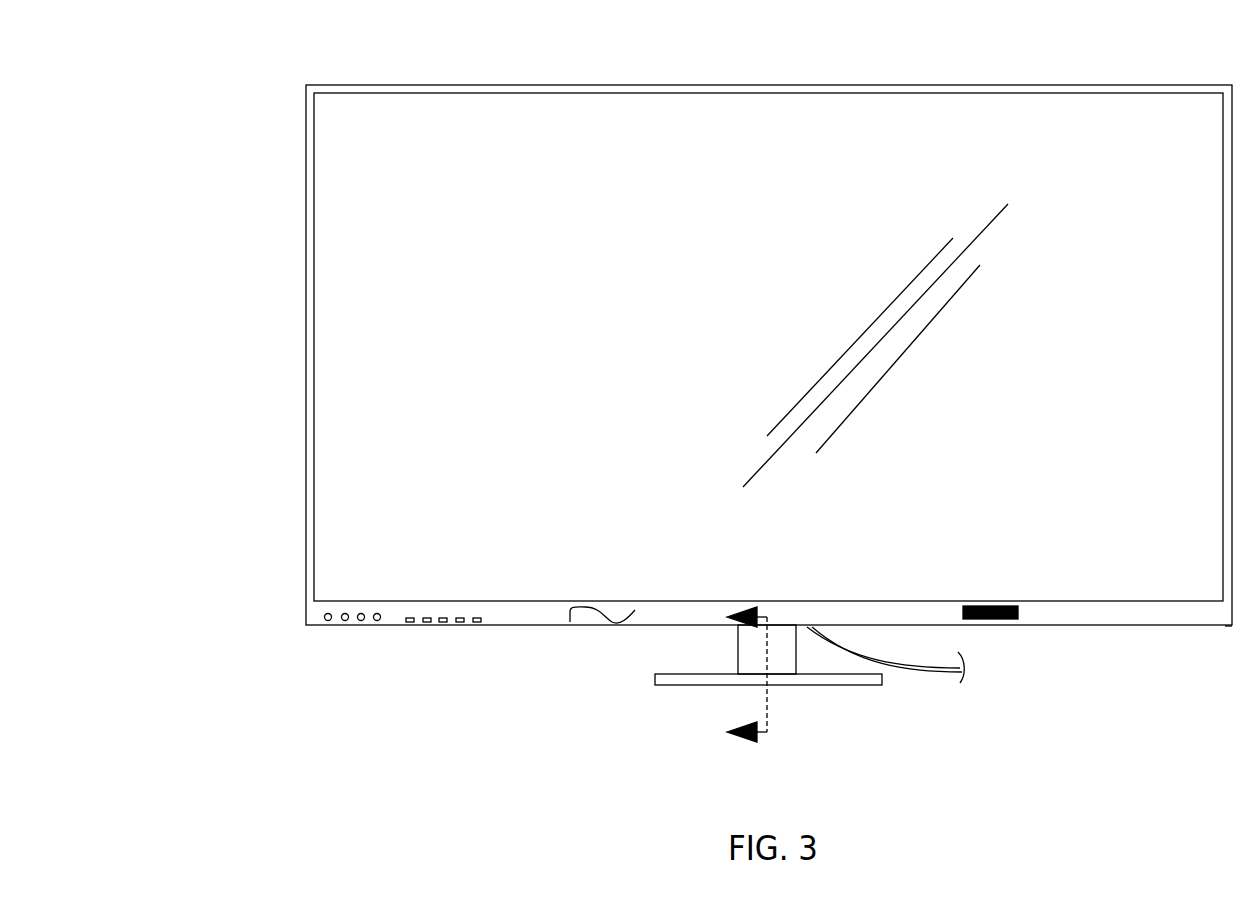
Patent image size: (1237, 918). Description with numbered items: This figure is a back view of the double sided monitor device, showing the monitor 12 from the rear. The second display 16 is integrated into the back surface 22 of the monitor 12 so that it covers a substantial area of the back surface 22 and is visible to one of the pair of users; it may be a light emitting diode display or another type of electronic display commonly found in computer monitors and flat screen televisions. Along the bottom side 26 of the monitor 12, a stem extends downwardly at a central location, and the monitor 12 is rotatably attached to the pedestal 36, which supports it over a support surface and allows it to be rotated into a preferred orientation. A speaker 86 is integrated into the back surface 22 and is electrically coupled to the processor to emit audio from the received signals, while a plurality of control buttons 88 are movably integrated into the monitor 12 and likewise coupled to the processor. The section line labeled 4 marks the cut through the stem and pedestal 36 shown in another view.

The monitor 12 is at (306, 106).
The second display 16 is at (315, 217).
The back surface 22 is at (602, 627).
The bottom side 26 is at (1210, 627).
The pedestal 36 is at (692, 693).
The section line 4- 4 is at (747, 676).
The speaker 86 is at (1020, 620).
The control buttons 88 is at (357, 627).